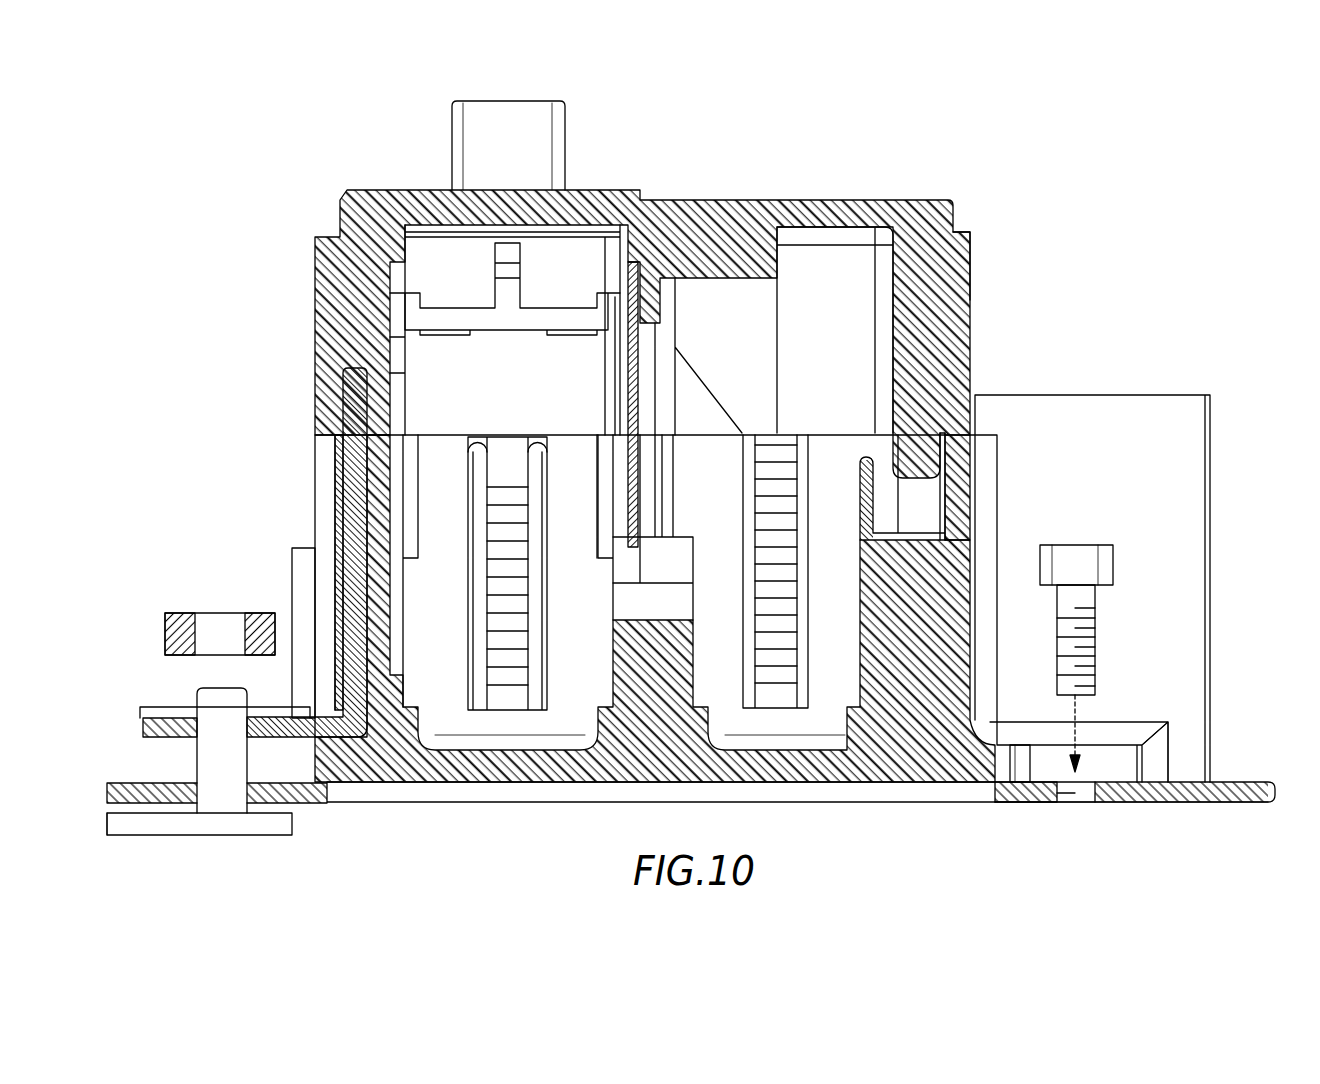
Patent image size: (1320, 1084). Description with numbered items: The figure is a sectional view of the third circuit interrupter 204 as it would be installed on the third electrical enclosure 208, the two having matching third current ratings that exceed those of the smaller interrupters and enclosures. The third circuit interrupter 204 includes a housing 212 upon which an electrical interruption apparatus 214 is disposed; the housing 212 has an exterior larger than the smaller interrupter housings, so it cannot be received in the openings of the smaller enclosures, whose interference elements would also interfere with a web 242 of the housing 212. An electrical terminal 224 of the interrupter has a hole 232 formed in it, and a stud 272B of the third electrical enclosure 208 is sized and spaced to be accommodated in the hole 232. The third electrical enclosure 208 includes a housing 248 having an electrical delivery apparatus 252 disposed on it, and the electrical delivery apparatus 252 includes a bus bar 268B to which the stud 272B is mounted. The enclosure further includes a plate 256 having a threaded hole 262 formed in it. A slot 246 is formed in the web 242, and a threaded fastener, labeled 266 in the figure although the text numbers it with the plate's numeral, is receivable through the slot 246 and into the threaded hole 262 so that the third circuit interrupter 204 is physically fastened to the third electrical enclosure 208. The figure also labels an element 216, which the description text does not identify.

The third circuit interrupter 204 is at (858, 192).
The housing 212 is at (973, 264).
The fastener 266 is at (1078, 545).
The slot 246 is at (1043, 762).
The bracket 216 is at (1108, 768).
The web 242 is at (1147, 762).
The plate 256 is at (1257, 782).
The housing 248 is at (1252, 804).
The third electrical enclosure 208 is at (1213, 803).
The threaded hole 262 is at (993, 788).
The hole 232 is at (197, 715).
The electrical interruption apparatus 214 is at (288, 715).
The electrical terminal 224 is at (163, 738).
The stud 272B is at (203, 753).
The bus bar 268B is at (293, 820).
The electrical delivery apparatus 252 is at (232, 837).